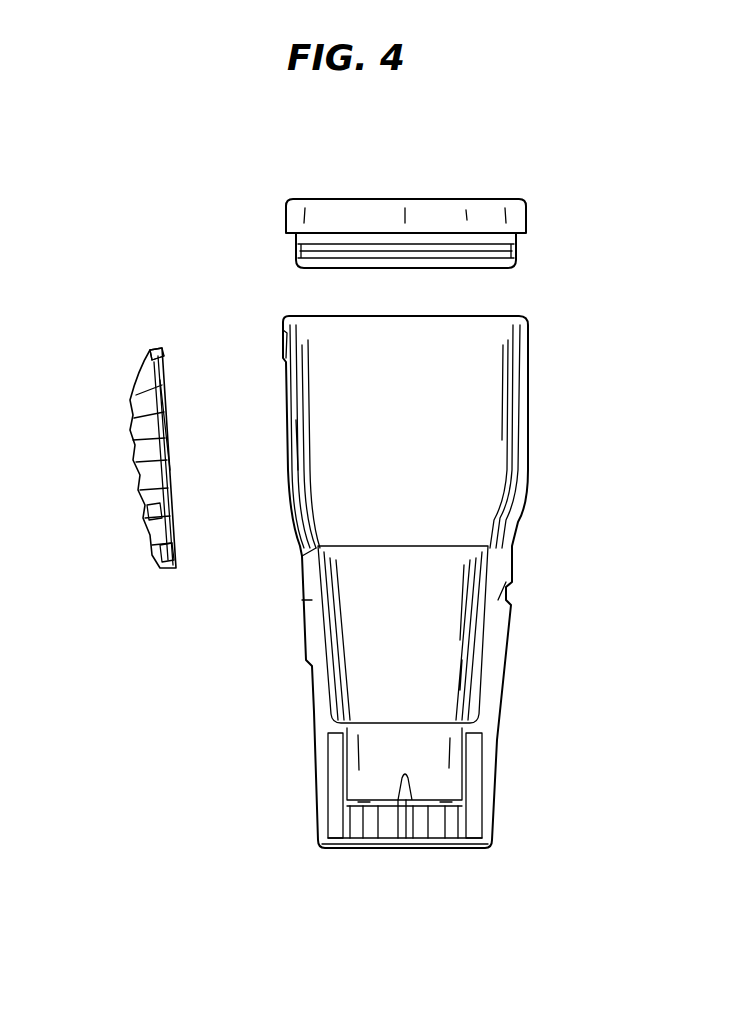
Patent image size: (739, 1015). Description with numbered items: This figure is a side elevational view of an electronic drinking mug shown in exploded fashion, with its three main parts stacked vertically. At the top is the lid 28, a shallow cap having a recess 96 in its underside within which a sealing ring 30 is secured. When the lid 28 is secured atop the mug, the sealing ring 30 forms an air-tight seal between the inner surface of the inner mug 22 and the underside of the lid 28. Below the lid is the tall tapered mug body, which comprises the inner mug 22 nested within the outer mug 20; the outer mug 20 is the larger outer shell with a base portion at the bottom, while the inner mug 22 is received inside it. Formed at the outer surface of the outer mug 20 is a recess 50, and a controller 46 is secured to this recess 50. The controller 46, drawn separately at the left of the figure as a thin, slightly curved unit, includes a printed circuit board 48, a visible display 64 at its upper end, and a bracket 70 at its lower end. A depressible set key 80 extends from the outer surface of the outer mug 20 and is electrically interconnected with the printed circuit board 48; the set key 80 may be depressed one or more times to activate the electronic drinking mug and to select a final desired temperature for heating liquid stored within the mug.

The outer mug 20 is at (312, 778).
The inner mug 22 is at (528, 324).
The lid 28 is at (522, 216).
The sealing ring 30 is at (518, 250).
The recess 96 is at (404, 254).
The recess 50 is at (292, 425).
The controller 46 is at (122, 370).
The visible display 64 is at (154, 348).
The printed circuit board 48 is at (165, 410).
The depressible set key 80 is at (145, 512).
The bracket 70 is at (172, 570).